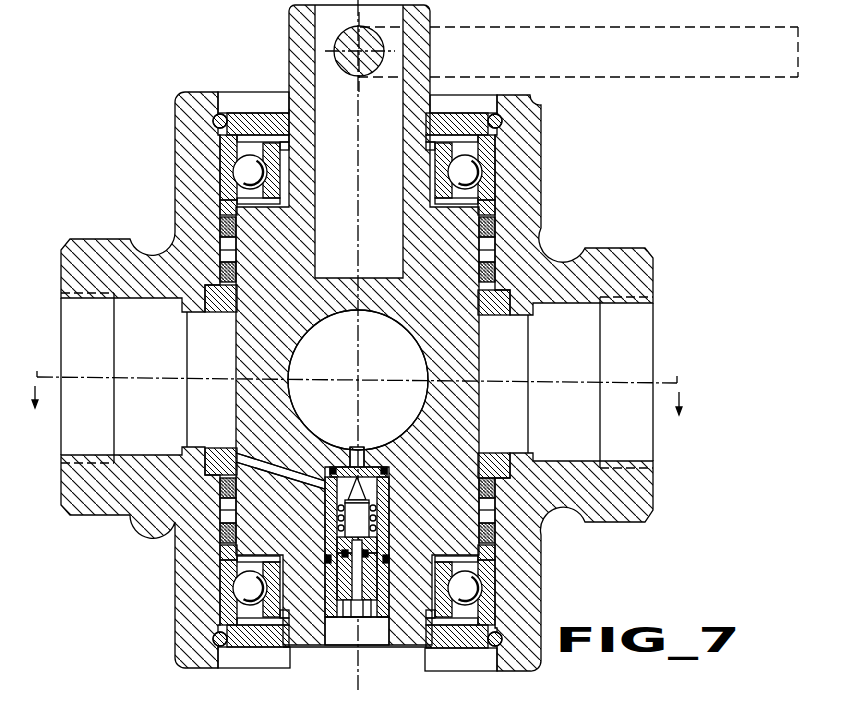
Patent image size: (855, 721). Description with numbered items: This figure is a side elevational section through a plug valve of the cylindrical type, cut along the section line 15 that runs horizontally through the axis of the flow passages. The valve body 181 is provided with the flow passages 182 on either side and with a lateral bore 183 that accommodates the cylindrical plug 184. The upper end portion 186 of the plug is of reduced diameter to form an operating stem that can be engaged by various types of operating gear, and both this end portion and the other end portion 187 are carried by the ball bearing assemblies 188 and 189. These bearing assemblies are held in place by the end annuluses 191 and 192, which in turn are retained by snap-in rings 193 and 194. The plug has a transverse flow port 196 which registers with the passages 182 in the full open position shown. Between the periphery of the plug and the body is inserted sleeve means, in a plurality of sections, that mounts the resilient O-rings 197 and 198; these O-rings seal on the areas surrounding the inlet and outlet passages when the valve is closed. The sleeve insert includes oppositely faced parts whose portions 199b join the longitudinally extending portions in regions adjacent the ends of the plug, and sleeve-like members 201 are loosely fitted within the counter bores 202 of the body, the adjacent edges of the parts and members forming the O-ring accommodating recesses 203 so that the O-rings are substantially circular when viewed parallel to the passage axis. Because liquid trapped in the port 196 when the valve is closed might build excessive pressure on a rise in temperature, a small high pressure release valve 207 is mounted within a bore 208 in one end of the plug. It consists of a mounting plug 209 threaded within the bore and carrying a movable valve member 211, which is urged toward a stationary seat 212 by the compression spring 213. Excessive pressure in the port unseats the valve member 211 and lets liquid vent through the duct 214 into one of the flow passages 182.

The section line 15- 15 is at (358, 345).
The valve body 181 is at (541, 178).
The flow passages 182 is at (68, 316).
The lateral bore 183 is at (497, 163).
The cylindrical plug 184 is at (481, 358).
The upper end portion 186 is at (289, 30).
The other end portion 187 is at (425, 645).
The bearing assembly 188 is at (248, 172).
The bearing assembly 189 is at (238, 588).
The end annulus 191 is at (257, 115).
The end annulus 192 is at (240, 650).
The snap-in ring 193 is at (213, 121).
The snap-in ring 194 is at (212, 639).
The transverse flow port 196 is at (302, 337).
The O-ring 197 is at (218, 493).
The O-ring 198 is at (222, 232).
The portions 199b is at (222, 248).
The sleeve-like members 201 is at (212, 452).
The counter bores 202 is at (207, 478).
The O-ring accommodating recesses 203 is at (220, 256).
The high pressure release valve 207 is at (392, 511).
The bore 208 is at (380, 646).
The mounting plug 209 is at (335, 642).
The movable valve member 211 is at (368, 480).
The stationary seat 212 is at (352, 467).
The compression spring 213 is at (375, 537).
The duct 214 is at (305, 437).